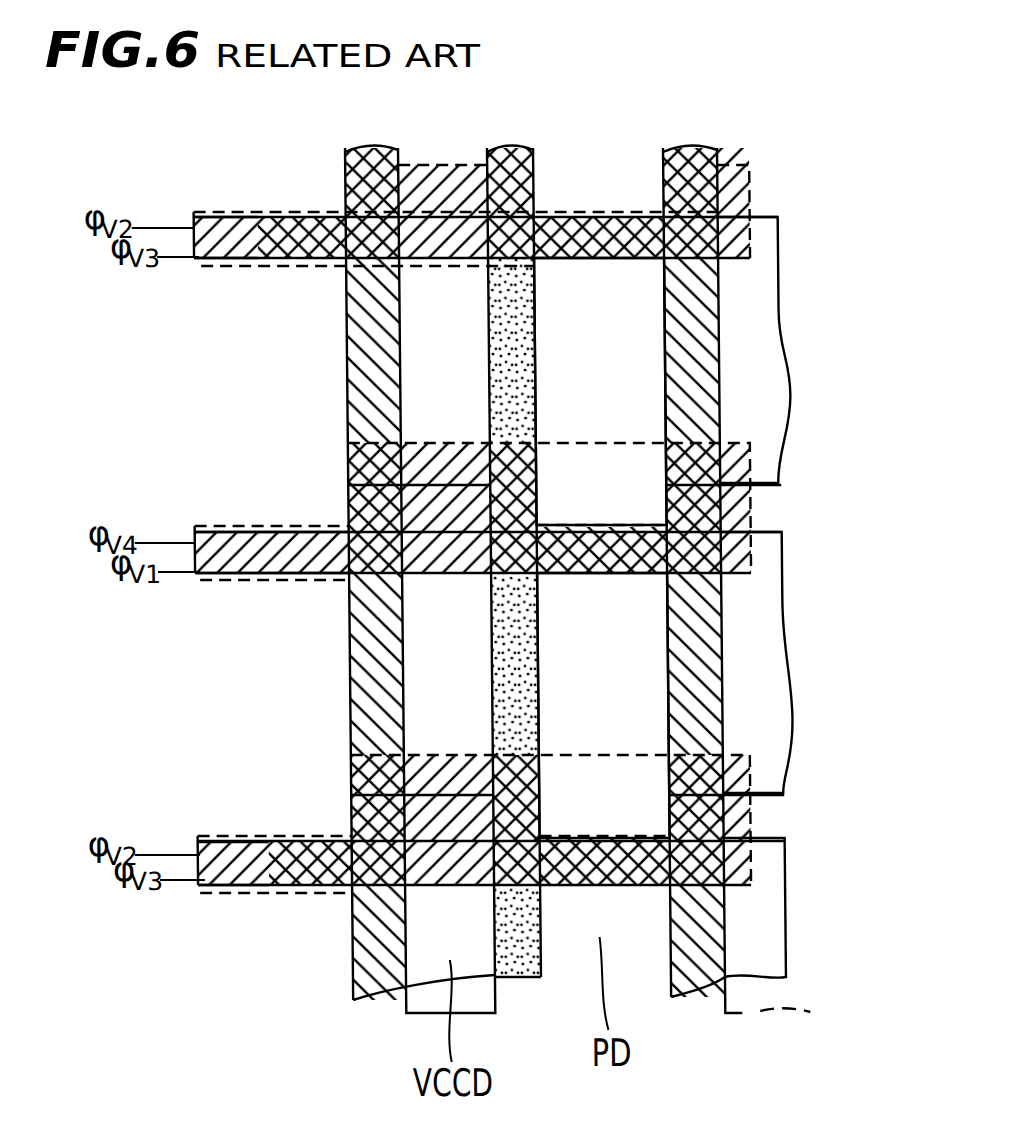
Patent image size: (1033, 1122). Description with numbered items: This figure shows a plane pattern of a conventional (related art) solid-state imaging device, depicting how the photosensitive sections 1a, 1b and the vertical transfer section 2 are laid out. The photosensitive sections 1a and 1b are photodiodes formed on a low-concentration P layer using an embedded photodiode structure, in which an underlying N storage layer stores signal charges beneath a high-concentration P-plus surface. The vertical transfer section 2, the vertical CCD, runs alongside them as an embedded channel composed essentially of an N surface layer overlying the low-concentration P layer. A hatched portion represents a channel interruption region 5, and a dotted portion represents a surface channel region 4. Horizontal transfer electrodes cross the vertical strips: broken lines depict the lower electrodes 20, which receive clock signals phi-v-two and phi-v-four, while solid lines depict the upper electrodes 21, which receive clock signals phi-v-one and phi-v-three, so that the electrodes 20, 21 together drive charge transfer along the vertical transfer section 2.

The photosensitive section 1a is at (600, 391).
The photosensitive section 1b is at (603, 705).
The vertical transfer section 2 is at (421, 373).
The surface channel region 4 is at (510, 333).
The channel interruption region 5 is at (687, 673).
The lower electrodes 20 is at (201, 262).
The upper electrodes 21 is at (777, 287).